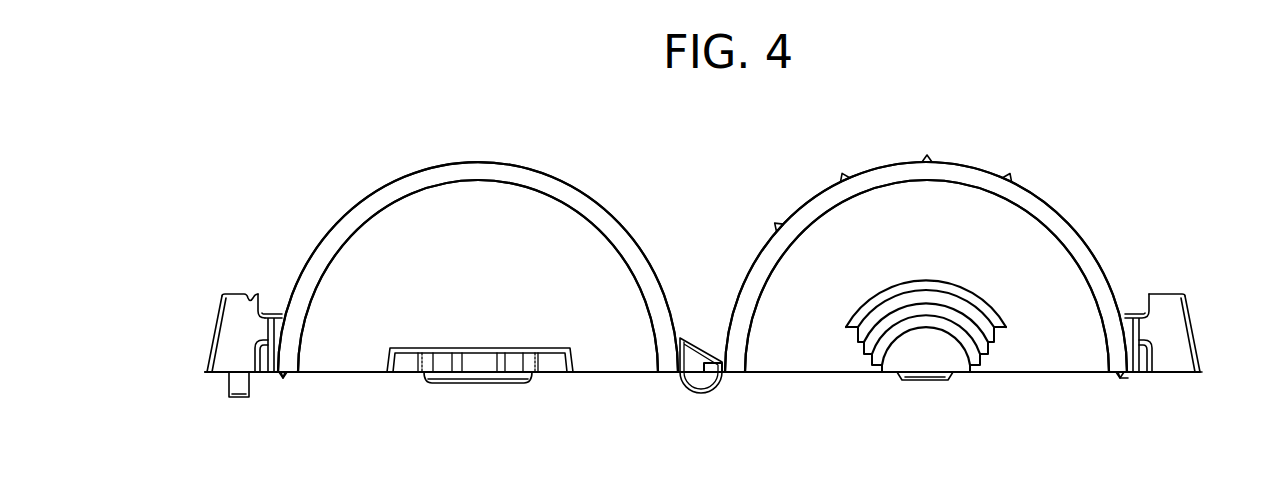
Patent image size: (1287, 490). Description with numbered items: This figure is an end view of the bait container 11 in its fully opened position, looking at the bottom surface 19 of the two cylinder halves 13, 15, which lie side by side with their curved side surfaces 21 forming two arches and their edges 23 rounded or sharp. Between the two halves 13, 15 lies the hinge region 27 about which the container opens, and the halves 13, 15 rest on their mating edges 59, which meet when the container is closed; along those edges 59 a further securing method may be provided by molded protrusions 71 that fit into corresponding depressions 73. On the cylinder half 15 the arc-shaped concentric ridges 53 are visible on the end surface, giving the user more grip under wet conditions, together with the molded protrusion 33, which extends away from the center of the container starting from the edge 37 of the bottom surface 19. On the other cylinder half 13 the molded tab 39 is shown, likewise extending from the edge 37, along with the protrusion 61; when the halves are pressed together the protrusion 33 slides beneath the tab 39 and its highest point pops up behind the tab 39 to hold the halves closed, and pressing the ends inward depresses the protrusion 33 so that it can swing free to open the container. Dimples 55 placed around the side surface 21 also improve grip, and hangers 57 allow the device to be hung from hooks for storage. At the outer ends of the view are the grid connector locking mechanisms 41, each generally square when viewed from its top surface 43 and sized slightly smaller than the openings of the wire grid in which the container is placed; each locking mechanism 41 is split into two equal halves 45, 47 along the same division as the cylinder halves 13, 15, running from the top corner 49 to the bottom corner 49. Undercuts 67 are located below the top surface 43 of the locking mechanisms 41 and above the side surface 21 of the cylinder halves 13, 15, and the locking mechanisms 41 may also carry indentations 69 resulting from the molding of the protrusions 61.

The bait container 11 is at (572, 161).
The first half of the cylindrical container 13 is at (594, 196).
The second half of the cylindrical container 15 is at (779, 223).
The bottom surface 19 is at (352, 360).
The side surface 21 is at (420, 167).
The edges 23 is at (470, 172).
The central hook 27 is at (704, 342).
The molded protrusions 33 is at (925, 384).
The edge of the bottom surface 37 is at (618, 374).
The molded tabs 39 is at (462, 383).
The grid connector locking mechanism 41 is at (228, 420).
The top surface of the locking mechanism 43 is at (213, 320).
The first half of the locking mechanism 45 is at (230, 285).
The second half of the locking mechanism 47 is at (1178, 284).
The corners of the locking mechanism 49 is at (222, 375).
The concentric ridges 53 is at (992, 352).
The dimples 55 is at (1016, 174).
The hangers 57 is at (482, 362).
The edges of the halves 59 is at (290, 378).
The protrusion 61 is at (250, 398).
The undercuts 67 is at (275, 310).
The indentations 69 is at (255, 304).
The molded protrusions on the edges 71 is at (282, 385).
The depressions 73 is at (1132, 378).